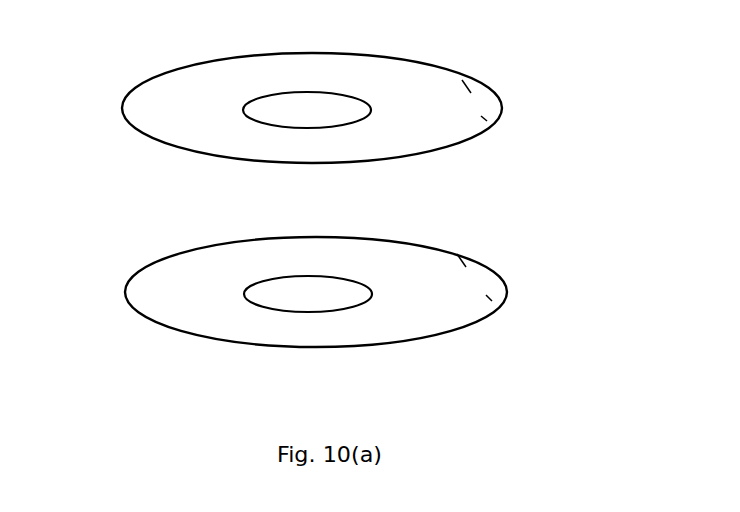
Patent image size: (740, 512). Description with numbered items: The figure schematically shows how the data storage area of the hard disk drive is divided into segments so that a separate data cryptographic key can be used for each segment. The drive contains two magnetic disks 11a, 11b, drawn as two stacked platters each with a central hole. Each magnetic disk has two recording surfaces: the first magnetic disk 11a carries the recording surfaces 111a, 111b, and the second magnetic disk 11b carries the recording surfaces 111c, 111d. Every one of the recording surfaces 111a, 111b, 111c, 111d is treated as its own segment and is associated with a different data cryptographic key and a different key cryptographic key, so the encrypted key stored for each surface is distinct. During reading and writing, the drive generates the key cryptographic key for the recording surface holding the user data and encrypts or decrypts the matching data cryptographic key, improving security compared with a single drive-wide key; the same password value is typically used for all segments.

The magnetic disk 11a is at (159, 89).
The recording surface 111a is at (467, 87).
The recording surface 111b is at (495, 124).
The magnetic disk 11b is at (150, 280).
The recording surface 111c is at (462, 263).
The recording surface 111d is at (500, 305).